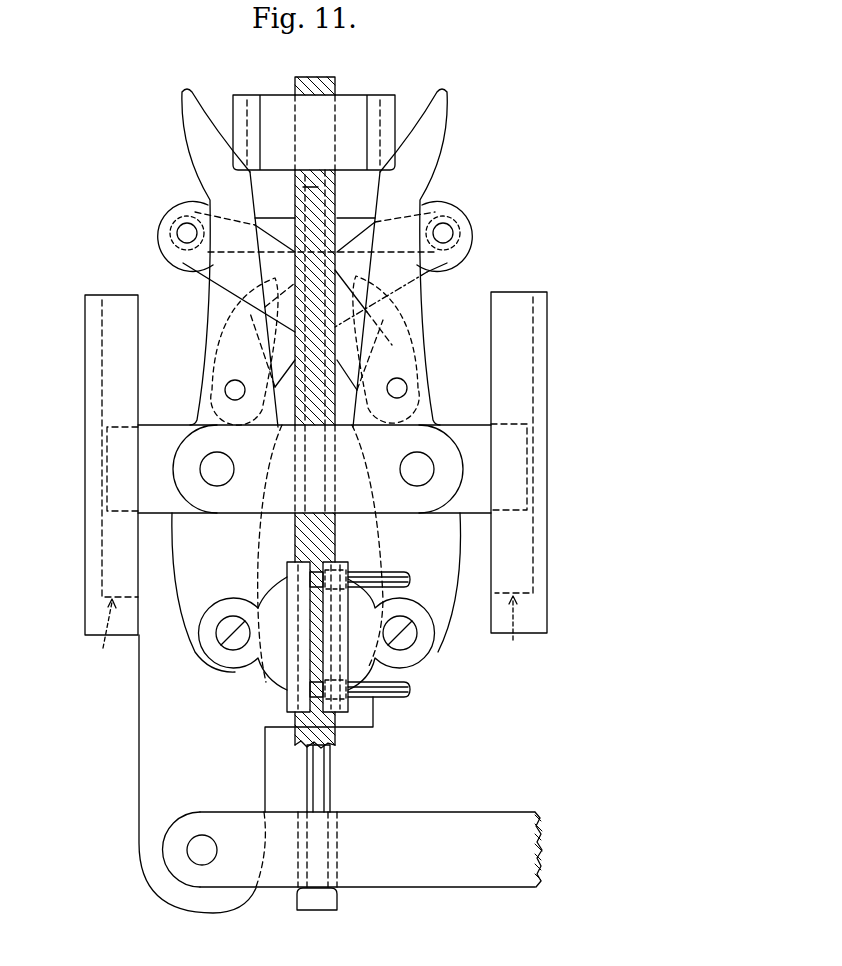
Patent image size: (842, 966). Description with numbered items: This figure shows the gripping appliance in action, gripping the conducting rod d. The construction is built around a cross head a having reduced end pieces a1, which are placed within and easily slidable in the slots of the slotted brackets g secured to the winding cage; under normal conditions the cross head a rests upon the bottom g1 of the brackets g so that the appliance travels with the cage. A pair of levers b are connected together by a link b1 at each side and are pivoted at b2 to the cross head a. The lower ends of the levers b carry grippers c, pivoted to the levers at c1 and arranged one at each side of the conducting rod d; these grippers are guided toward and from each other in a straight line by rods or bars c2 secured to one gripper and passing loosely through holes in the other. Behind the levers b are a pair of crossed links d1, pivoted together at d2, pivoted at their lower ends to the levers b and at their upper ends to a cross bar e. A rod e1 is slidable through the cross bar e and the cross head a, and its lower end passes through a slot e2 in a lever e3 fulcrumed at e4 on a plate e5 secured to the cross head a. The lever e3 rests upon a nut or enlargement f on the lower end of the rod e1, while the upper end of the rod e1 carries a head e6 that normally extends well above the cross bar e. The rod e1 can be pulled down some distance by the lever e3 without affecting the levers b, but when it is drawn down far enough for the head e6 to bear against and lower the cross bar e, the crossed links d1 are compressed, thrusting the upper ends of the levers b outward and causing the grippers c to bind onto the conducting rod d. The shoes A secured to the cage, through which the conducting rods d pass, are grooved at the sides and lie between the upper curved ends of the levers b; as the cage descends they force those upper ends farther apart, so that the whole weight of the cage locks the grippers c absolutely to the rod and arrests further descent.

The shoe A is at (272, 106).
The cross head a is at (168, 436).
The reduced end piece a1 is at (118, 467).
The lever b is at (210, 336).
The link b1 is at (287, 504).
The pivot b2 is at (221, 478).
The gripper c is at (398, 610).
The gripper pivot c1 is at (228, 616).
The guide rod c2 is at (410, 579).
The conducting rod d is at (330, 78).
The crossed link d1 is at (188, 262).
The link pivot d2 is at (337, 270).
The cross bar e is at (282, 202).
The rod e1 is at (320, 782).
The slot e2 is at (337, 845).
The lever e3 is at (503, 817).
The fulcrum e4 is at (203, 850).
The plate e5 is at (147, 783).
The head e6 is at (318, 187).
The nut f is at (322, 900).
The slotted bracket g is at (85, 563).
The bracket bottom g1 is at (307, 638).